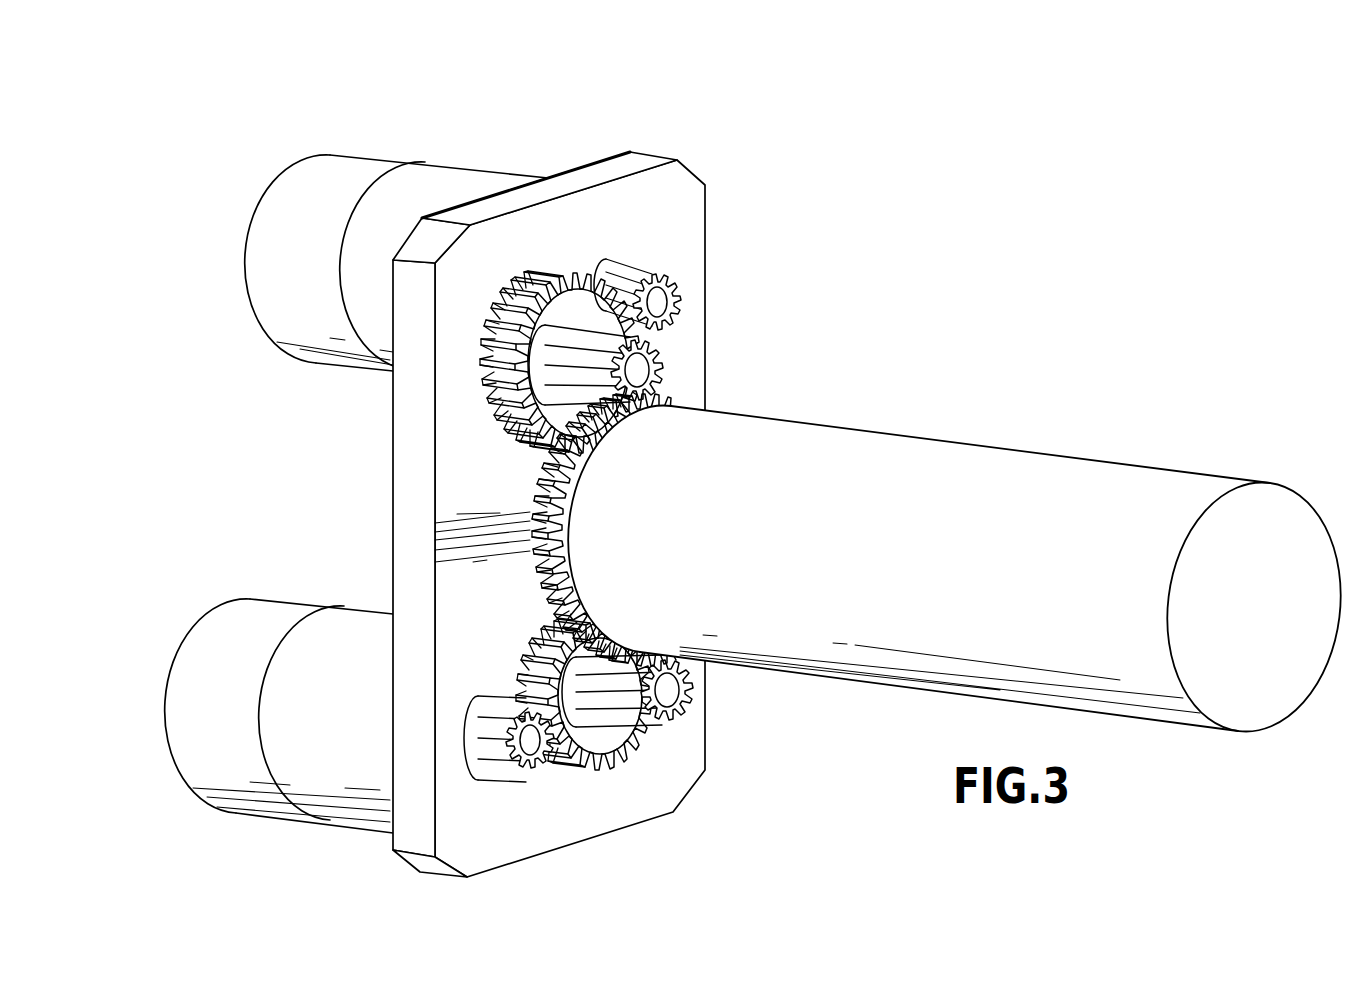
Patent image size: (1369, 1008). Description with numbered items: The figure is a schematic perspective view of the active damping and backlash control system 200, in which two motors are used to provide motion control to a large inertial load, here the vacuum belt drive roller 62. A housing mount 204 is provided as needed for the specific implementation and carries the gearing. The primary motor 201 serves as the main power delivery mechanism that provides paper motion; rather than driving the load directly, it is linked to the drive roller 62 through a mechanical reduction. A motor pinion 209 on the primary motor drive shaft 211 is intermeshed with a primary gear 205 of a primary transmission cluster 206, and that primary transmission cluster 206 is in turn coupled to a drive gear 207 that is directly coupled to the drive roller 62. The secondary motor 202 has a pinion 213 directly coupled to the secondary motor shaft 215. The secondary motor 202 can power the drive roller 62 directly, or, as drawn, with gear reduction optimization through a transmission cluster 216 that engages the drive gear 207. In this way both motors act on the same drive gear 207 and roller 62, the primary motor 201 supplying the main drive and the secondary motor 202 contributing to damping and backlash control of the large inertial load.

The active damping and backlash control system 200 is at (300, 110).
The primary motor 201 is at (457, 164).
The secondary motor 202 is at (286, 599).
The housing mount 204 is at (593, 163).
The primary gear 205 is at (587, 272).
The primary transmission cluster 206 is at (480, 401).
The drive gear 207 is at (573, 503).
The motor pinion 209 is at (670, 335).
The drive shaft 211 is at (677, 288).
The pinion 213 is at (525, 782).
The secondary motor shaft 215 is at (497, 697).
The transmission cluster 216 is at (672, 756).
The vacuum belt drive roller 62 is at (1060, 458).